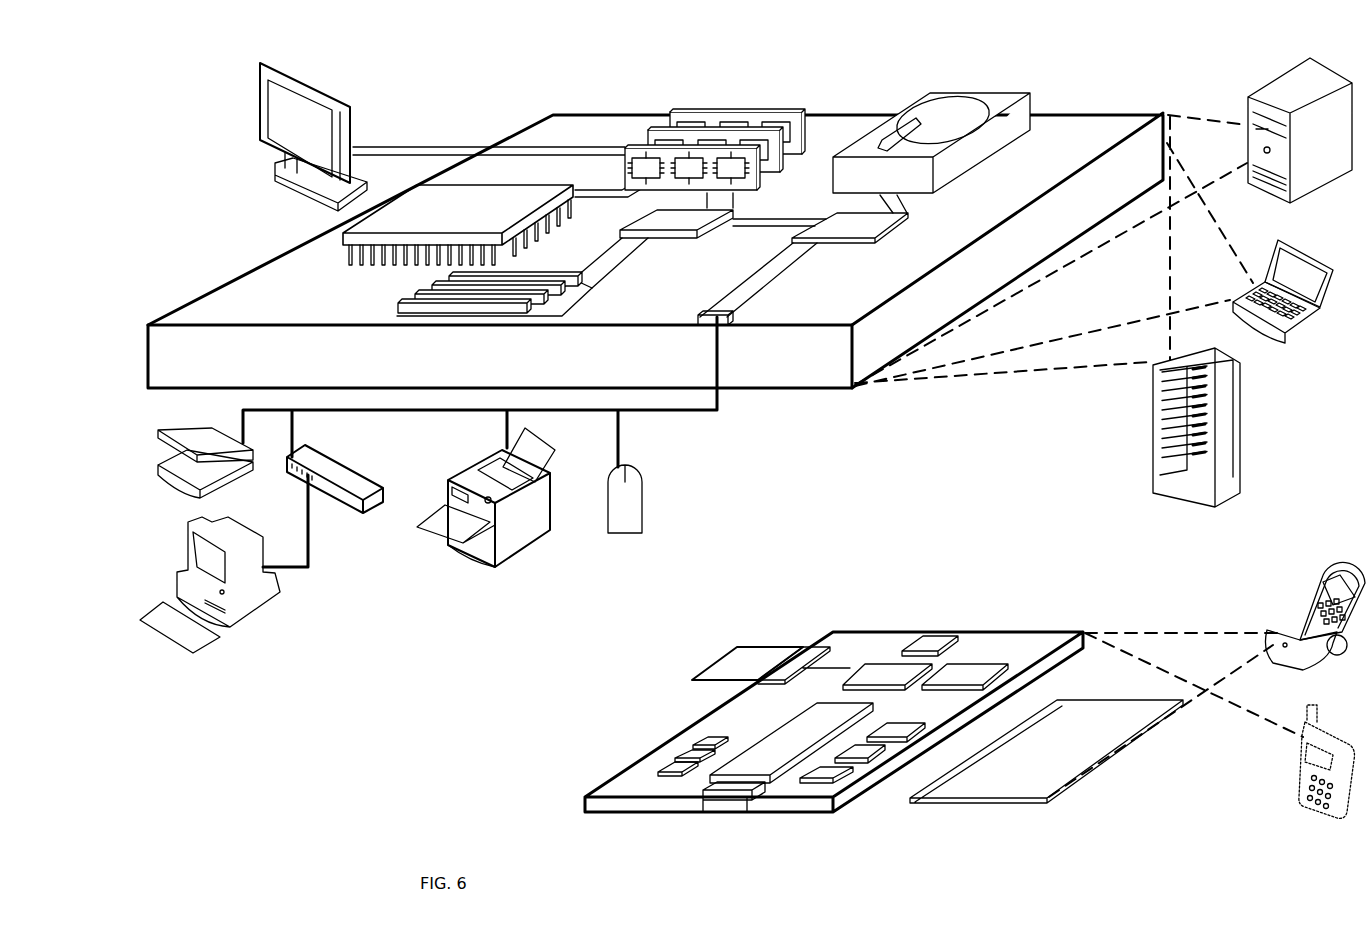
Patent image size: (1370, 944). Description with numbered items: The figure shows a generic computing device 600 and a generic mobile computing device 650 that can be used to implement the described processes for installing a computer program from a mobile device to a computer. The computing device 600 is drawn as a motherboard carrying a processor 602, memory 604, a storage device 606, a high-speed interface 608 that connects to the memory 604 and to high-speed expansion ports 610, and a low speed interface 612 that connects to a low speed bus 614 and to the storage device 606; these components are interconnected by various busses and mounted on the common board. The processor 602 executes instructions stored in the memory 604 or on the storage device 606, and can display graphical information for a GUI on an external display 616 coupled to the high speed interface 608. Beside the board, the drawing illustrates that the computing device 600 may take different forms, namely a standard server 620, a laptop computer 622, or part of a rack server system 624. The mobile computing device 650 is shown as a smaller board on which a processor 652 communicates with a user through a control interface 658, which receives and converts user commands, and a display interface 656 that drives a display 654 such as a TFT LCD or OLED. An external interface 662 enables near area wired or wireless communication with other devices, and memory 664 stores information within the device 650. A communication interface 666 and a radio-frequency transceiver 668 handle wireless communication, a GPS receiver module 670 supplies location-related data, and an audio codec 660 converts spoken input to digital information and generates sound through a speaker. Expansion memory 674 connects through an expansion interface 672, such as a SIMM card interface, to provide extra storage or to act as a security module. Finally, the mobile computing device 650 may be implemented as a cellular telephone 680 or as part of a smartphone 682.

The computing device 600 is at (479, 91).
The processor 602 is at (343, 240).
The memory 604 is at (693, 110).
The storage device 606 is at (926, 110).
The high-speed interface 608 is at (649, 219).
The high-speed expansion ports 610 is at (415, 295).
The low speed interface 612 is at (850, 219).
The low speed bus 614 is at (728, 329).
The display 616 is at (259, 77).
The standard server 620 is at (1248, 103).
The laptop computer 622 is at (1278, 244).
The rack server system 624 is at (1155, 462).
The mobile computing device 650 is at (817, 612).
The processor 652 is at (770, 782).
The display 654 is at (1047, 799).
The display interface 656 is at (813, 784).
The control interface 658 is at (882, 761).
The audio codec 660 is at (901, 741).
The external interface 662 is at (745, 795).
The memory 664 is at (684, 755).
The communication interface 666 is at (883, 668).
The transceiver 668 is at (964, 665).
The GPS receiver module 670 is at (936, 638).
The expansion interface 672 is at (803, 649).
The expansion memory 674 is at (736, 648).
The cellular telephone 680 is at (1330, 577).
The smartphone 682 is at (1310, 720).